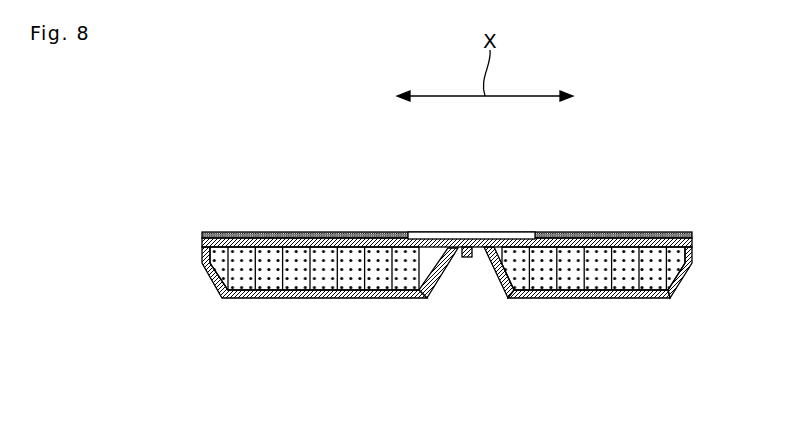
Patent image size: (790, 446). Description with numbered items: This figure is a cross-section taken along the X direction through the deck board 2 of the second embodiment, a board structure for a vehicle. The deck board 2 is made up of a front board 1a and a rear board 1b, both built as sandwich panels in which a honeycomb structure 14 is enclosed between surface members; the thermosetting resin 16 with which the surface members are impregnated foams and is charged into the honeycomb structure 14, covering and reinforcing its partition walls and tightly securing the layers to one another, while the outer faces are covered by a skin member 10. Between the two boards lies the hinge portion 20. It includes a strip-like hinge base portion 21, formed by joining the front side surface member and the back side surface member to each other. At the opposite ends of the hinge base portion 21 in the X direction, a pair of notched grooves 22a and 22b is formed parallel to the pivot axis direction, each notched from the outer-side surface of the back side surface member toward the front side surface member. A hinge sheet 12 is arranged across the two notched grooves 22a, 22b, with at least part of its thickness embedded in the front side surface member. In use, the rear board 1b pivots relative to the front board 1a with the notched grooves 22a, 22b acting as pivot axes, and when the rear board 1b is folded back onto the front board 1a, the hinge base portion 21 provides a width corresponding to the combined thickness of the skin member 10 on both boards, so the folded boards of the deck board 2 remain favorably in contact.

The deck board 2 is at (468, 296).
The skin member 10 is at (645, 232).
The hinge sheet 12 is at (502, 232).
The honeycomb structure 14 is at (648, 298).
The thermosetting resin 16 is at (672, 263).
The front board 1a is at (277, 300).
The rear board 1b is at (621, 305).
The hinge portion 20 is at (458, 293).
The hinge base portion 21 is at (452, 285).
The notched groove 22a is at (454, 255).
The notched groove 22b is at (477, 250).